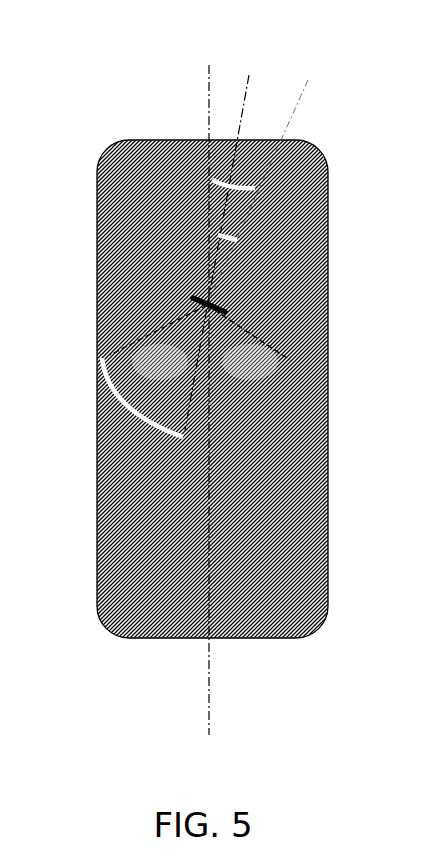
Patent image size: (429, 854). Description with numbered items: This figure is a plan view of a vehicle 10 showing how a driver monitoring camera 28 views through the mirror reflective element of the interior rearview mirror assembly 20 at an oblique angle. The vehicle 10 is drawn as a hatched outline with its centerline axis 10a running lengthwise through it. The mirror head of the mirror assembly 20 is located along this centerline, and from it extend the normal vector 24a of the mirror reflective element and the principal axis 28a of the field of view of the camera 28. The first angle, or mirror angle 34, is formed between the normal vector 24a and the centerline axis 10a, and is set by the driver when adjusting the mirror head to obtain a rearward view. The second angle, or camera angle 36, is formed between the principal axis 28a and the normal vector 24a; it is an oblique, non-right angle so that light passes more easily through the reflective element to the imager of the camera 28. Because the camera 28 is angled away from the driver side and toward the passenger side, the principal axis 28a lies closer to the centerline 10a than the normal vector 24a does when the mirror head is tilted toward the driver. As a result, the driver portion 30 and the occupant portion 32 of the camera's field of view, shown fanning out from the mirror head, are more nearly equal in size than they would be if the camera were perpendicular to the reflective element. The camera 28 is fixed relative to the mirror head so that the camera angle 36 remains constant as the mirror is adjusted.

The vehicle 10 is at (100, 542).
The centerline axis of the vehicle 10a is at (208, 122).
The interior rearview mirror assembly 20 is at (197, 298).
The normal vector of the mirror reflective element 24a is at (295, 112).
The driver monitoring camera 28 is at (210, 300).
The principal axis of the field of view of the camera 28a is at (245, 97).
The driver portion of the field of view 30 is at (108, 373).
The occupant portion of the field of view 32 is at (280, 388).
The mirror angle 34 is at (255, 188).
The camera angle 36 is at (237, 240).